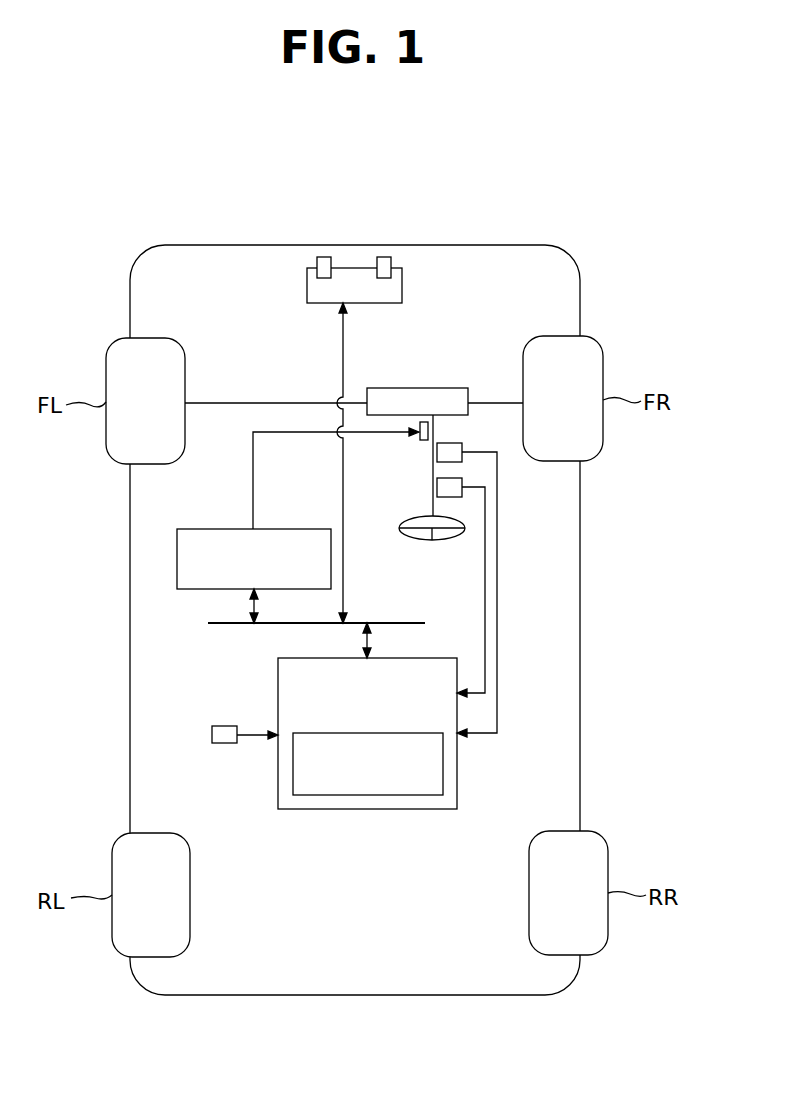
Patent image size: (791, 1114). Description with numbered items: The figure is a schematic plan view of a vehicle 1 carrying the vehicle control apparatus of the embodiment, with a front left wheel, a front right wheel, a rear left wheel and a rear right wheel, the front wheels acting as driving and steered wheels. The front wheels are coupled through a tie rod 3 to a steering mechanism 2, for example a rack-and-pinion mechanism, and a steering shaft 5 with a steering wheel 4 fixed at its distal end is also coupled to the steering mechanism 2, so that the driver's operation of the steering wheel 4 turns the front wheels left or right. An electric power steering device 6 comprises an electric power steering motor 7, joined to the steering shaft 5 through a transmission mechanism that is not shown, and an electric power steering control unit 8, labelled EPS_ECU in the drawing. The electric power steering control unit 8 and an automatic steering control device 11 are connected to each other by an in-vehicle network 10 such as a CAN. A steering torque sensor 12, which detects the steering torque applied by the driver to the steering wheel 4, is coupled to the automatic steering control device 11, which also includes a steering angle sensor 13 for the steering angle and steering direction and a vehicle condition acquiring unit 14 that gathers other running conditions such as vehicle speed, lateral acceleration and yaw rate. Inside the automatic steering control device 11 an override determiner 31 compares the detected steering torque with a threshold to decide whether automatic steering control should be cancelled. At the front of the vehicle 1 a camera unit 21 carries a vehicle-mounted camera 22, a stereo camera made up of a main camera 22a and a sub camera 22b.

The vehicle 1 is at (512, 173).
The steering mechanism 2 is at (417, 388).
The tie rod 3 is at (256, 402).
The steering wheel 4 is at (432, 541).
The steering shaft 5 is at (432, 497).
The electric power steering device 6 is at (241, 480).
The electric power steering motor 7 is at (424, 441).
The electric power steering control unit 8 is at (286, 529).
The in-vehicle network 10 is at (388, 621).
The automatic steering control device 11 is at (367, 763).
The steering torque sensor 12 is at (446, 443).
The steering angle sensor 13 is at (455, 480).
The vehicle condition acquiring unit 14 is at (222, 726).
The camera unit 21 is at (307, 288).
The vehicle-mounted camera 22 is at (358, 215).
The main camera 22a is at (323, 257).
The sub camera 22b is at (385, 257).
The override determiner 31 is at (345, 796).